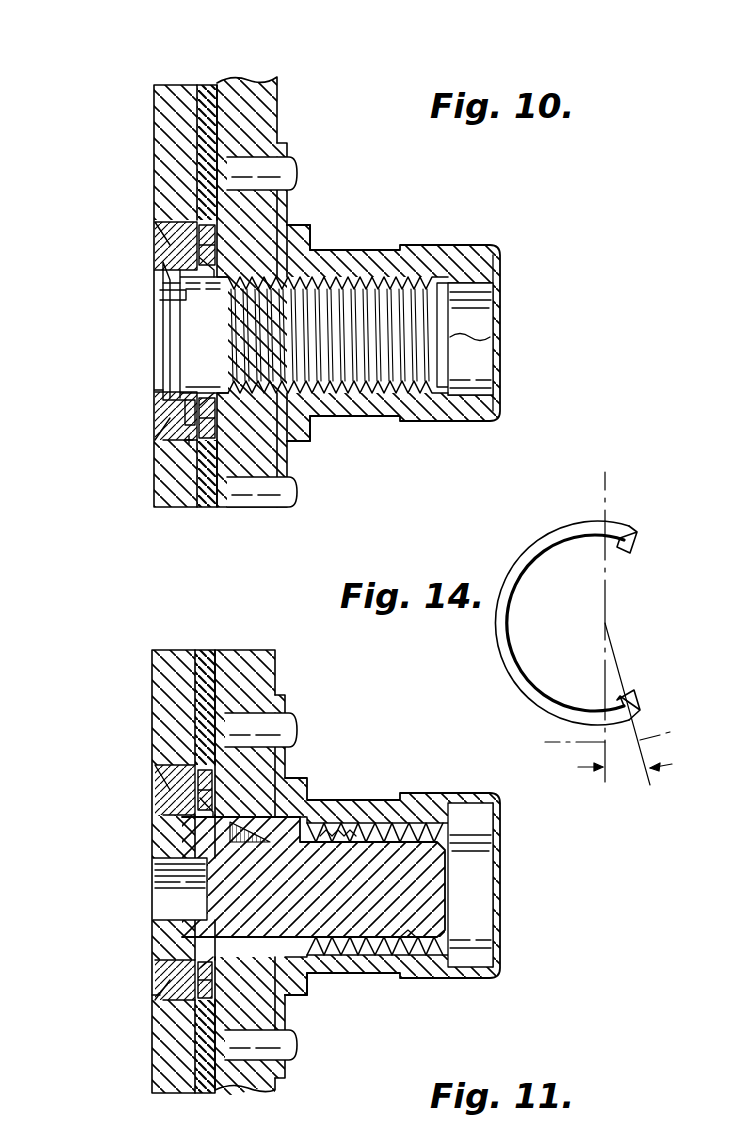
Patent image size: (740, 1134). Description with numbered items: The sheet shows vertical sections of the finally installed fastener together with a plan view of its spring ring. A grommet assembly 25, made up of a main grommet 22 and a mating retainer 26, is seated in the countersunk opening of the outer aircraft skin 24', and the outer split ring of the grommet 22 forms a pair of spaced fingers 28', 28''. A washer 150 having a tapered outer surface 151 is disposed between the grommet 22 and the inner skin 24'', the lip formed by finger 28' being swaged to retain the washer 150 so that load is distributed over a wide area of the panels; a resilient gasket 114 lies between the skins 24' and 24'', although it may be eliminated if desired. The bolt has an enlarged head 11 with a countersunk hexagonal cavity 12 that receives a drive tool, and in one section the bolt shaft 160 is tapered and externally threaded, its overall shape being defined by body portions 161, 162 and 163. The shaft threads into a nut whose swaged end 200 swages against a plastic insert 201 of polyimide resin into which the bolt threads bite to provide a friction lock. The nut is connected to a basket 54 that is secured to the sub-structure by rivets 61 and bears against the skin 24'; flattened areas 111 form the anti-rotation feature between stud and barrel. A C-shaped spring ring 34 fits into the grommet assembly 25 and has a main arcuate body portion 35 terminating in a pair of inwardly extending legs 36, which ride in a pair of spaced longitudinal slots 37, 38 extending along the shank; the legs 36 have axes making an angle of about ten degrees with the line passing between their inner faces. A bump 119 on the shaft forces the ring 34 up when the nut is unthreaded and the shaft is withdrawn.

In FIG. 11, the bolt head 11 is at (158, 832).
In FIG. 11, the hexagonally shaped cavity 12 is at (165, 912).
In FIG. 10, the grommet 22 is at (162, 245).
In FIG. 11, the grommet 22 is at (160, 792).
In FIG. 10, the skin 24' is at (280, 270).
In FIG. 11, the skin 24' is at (237, 845).
In FIG. 10, the skin 24'' is at (135, 285).
In FIG. 11, the skin 24'' is at (121, 869).
In FIG. 10, the grommet assembly 25 is at (188, 442).
In FIG. 11, the grommet assembly 25 is at (150, 1000).
In FIG. 10, the retainer 26 is at (200, 312).
In FIG. 10, the finger 28' is at (314, 325).
In FIG. 11, the finger 28' is at (260, 912).
In FIG. 10, the finger 28'' is at (325, 235).
In FIG. 10, the C-shaped ring 34 is at (190, 412).
In FIG. 14, the C-shaped ring 34 is at (542, 628).
In FIG. 14, the main arcuate body portion 35 is at (538, 556).
In FIG. 14, the legs 36 is at (635, 540).
In FIG. 11, the longitudinal slot 37 is at (370, 833).
In FIG. 11, the longitudinal slot 38 is at (340, 954).
In FIG. 10, the basket 54 is at (296, 448).
In FIG. 11, the basket 54 is at (302, 1010).
In FIG. 10, the rivets 61 is at (297, 170).
In FIG. 11, the rivets 61 is at (300, 1062).
In FIG. 10, the flattened areas 111 is at (168, 290).
In FIG. 10, the resilient gasket 114 is at (210, 95).
In FIG. 11, the resilient gasket 114 is at (205, 1093).
In FIG. 11, the bump 119 is at (410, 935).
In FIG. 10, the washer 150 is at (200, 236).
In FIG. 10, the tapered outer surface 151 is at (240, 440).
In FIG. 11, the bolt shaft 160 is at (323, 818).
In FIG. 11, the body portion 161 is at (200, 760).
In FIG. 11, the body portion 162 is at (265, 822).
In FIG. 11, the body portion 163 is at (330, 830).
In FIG. 10, the swaged end 200 is at (412, 329).
In FIG. 11, the swaged end 200 is at (437, 905).
In FIG. 10, the plastic insert 201 is at (463, 250).
In FIG. 11, the plastic insert 201 is at (462, 962).